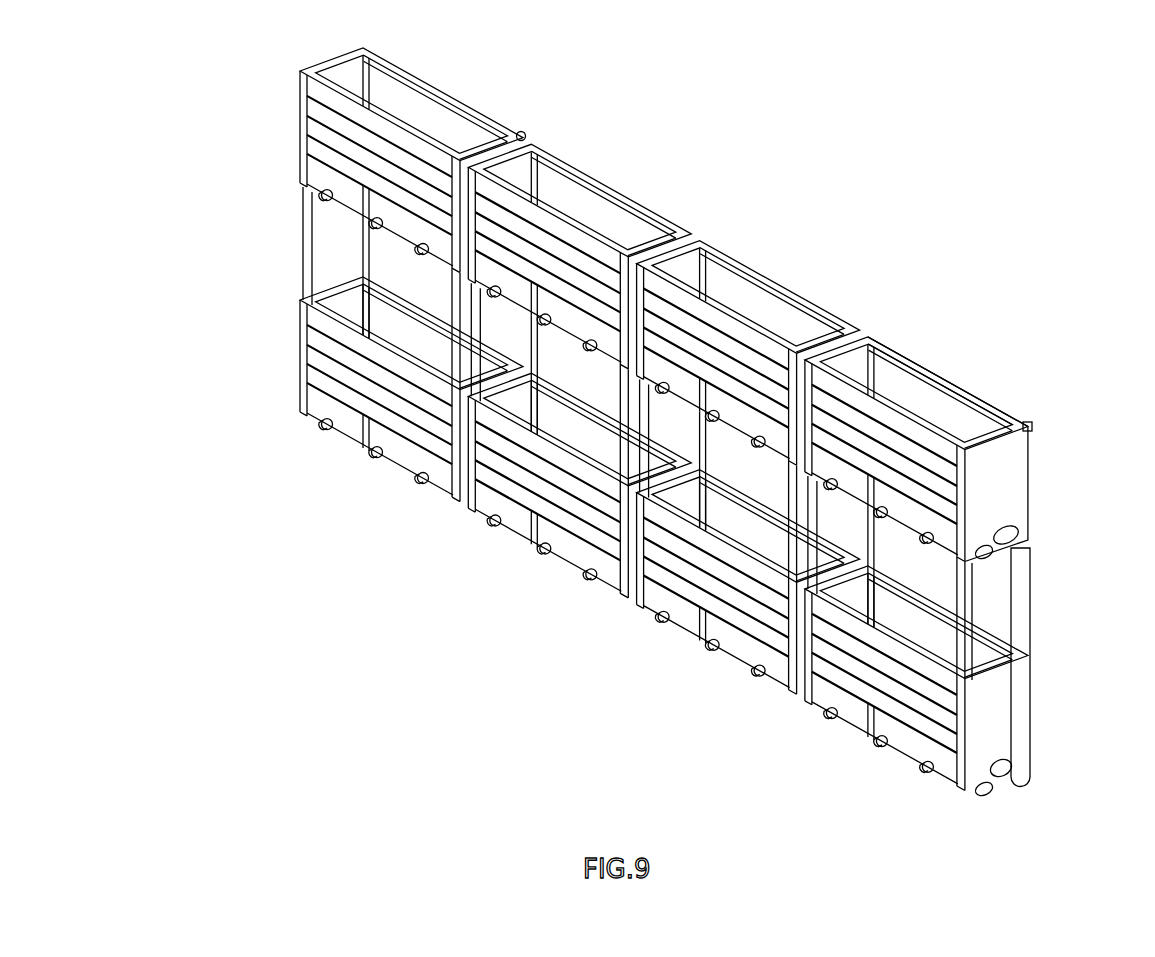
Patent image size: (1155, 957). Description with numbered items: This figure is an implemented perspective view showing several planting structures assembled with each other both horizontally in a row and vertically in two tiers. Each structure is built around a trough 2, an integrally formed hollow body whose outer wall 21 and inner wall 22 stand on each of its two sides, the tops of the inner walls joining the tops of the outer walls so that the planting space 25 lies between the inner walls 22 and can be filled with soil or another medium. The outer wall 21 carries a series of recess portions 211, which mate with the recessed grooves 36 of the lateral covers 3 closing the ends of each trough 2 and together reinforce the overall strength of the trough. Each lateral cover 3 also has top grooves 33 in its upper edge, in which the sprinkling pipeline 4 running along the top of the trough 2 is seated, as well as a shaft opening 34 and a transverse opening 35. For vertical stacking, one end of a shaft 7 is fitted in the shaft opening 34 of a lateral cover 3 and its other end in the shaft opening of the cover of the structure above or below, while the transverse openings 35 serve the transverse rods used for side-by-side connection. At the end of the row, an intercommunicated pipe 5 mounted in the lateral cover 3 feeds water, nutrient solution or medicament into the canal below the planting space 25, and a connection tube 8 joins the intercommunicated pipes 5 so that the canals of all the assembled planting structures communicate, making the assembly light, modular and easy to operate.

The trough 2 is at (773, 285).
The outer wall 21 is at (495, 505).
The recess portion 211 is at (790, 665).
The inner wall 22 is at (905, 355).
The planting space 25 is at (945, 378).
The lateral cover 3 is at (1008, 482).
The top groove 33 is at (513, 128).
The shaft opening 34 is at (1023, 422).
The transverse opening 35 is at (300, 378).
The recessed groove 36 is at (300, 148).
The sprinkling pipeline 4 is at (627, 212).
The intercommunicated pipe 5 is at (1010, 527).
The shaft 7 is at (300, 203).
The connection tube 8 is at (1035, 668).